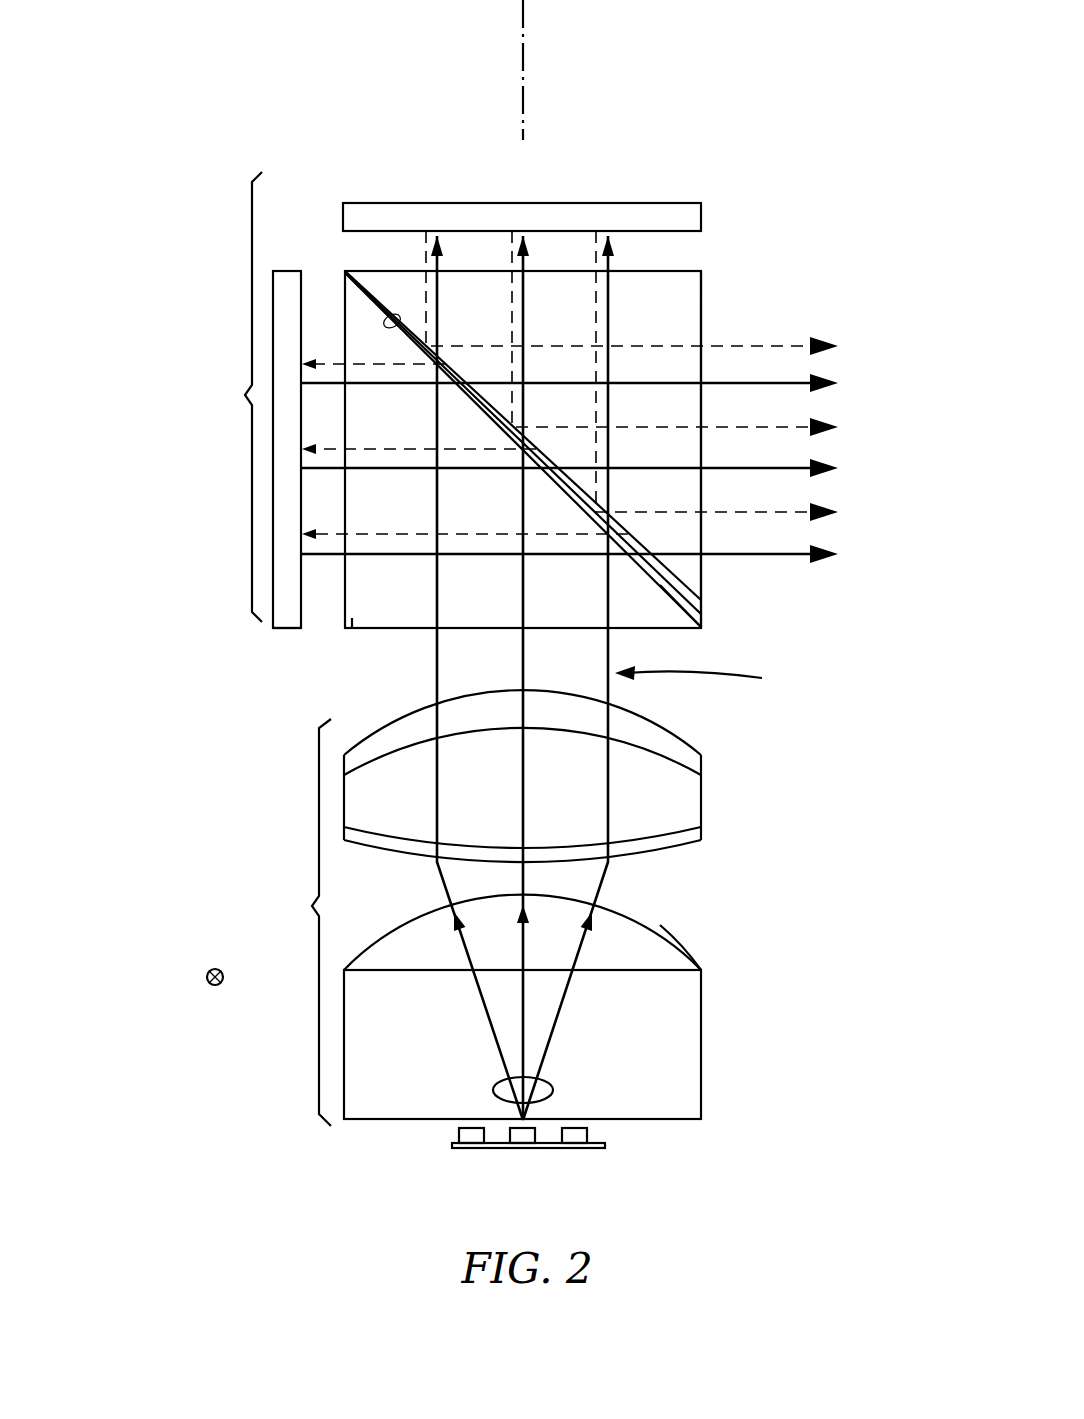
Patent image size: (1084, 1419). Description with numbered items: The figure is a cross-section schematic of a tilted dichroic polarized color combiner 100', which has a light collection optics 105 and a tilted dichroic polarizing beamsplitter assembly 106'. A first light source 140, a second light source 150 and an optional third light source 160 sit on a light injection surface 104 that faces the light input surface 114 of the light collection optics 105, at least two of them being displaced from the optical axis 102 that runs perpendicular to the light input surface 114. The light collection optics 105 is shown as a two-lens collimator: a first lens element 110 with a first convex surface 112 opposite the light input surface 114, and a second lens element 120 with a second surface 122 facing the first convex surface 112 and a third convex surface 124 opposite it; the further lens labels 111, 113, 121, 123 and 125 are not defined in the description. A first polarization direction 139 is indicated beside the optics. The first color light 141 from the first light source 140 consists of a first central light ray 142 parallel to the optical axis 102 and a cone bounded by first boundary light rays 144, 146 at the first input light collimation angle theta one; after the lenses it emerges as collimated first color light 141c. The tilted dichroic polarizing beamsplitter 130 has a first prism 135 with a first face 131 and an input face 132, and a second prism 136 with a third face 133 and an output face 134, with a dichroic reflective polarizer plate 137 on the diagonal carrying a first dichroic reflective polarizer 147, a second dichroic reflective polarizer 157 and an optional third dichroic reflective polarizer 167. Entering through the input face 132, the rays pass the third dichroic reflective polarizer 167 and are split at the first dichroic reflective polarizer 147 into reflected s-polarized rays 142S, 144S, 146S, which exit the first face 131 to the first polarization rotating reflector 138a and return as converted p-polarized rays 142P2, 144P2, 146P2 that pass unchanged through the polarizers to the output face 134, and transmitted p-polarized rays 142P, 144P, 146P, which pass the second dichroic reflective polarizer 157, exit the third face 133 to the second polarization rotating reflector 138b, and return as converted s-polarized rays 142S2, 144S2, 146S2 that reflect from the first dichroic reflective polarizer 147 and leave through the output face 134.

The tilted dichroic polarized color combiner 100' is at (502, 603).
The optical axis 102 is at (521, 15).
The light injection surface 104 is at (607, 1146).
The light collection optics 105 is at (564, 803).
The tilted dichroic polarizing beamsplitter assembly 106' is at (269, 416).
The first lens element 110 is at (710, 1034).
The light source body 111 is at (688, 1092).
The first convex surface 112 is at (690, 937).
The dome lens surface 113 is at (685, 963).
The light input surface 114 is at (372, 1135).
The second lens element 120 is at (763, 806).
The lens inner bottom surface 121 is at (692, 833).
The second surface 122 is at (680, 846).
The lens upper element 123 is at (680, 750).
The third convex surface 124 is at (670, 728).
The lens middle element 125 is at (685, 783).
The tilted dichroic polarizing beamsplitter 130 is at (768, 245).
The first face 131 is at (343, 612).
The input face 132 is at (367, 630).
The third face 133 is at (688, 270).
The output face 134 is at (703, 318).
The first prism 135 is at (352, 628).
The second prism 136 is at (700, 280).
The dichroic reflective polarizer plate 137 is at (400, 316).
The first polarization rotating reflector 138a is at (288, 270).
The second polarization rotating reflector 138b is at (343, 216).
The first polarization direction 139 is at (217, 985).
The first light source 140 is at (523, 1149).
The first color light 141 is at (553, 1095).
The collimated first color light 141c is at (722, 681).
The first central light ray 142 is at (525, 1001).
The first boundary light ray 144 is at (556, 1040).
The first boundary light ray 146 is at (490, 1042).
The transmitted first p-polarized central light ray 142P is at (526, 300).
The transmitted first p-polarized boundary light ray 144P is at (611, 300).
The transmitted first p-polarized boundary light ray 146P is at (440, 300).
The reflected first s-polarized central light ray 142S is at (380, 451).
The reflected first s-polarized boundary light ray 144S is at (388, 536).
The reflected first s-polarized boundary light ray 146S is at (375, 366).
The first converted s-polarized central light ray 142S2 is at (805, 427).
The first converted s-polarized boundary light ray 144S2 is at (805, 512).
The first converted s-polarized boundary light ray 146S2 is at (805, 346).
The first converted p-polarized central light ray 142P2 is at (805, 468).
The first converted p-polarized boundary light ray 144P2 is at (805, 554).
The first converted p-polarized boundary light ray 146P2 is at (805, 383).
The first dichroic reflective polarizer 147 is at (668, 582).
The second dichroic reflective polarizer 157 is at (697, 597).
The third dichroic reflective polarizer 167 is at (675, 617).
The second light source 150 is at (575, 1149).
The third light source 160 is at (472, 1149).